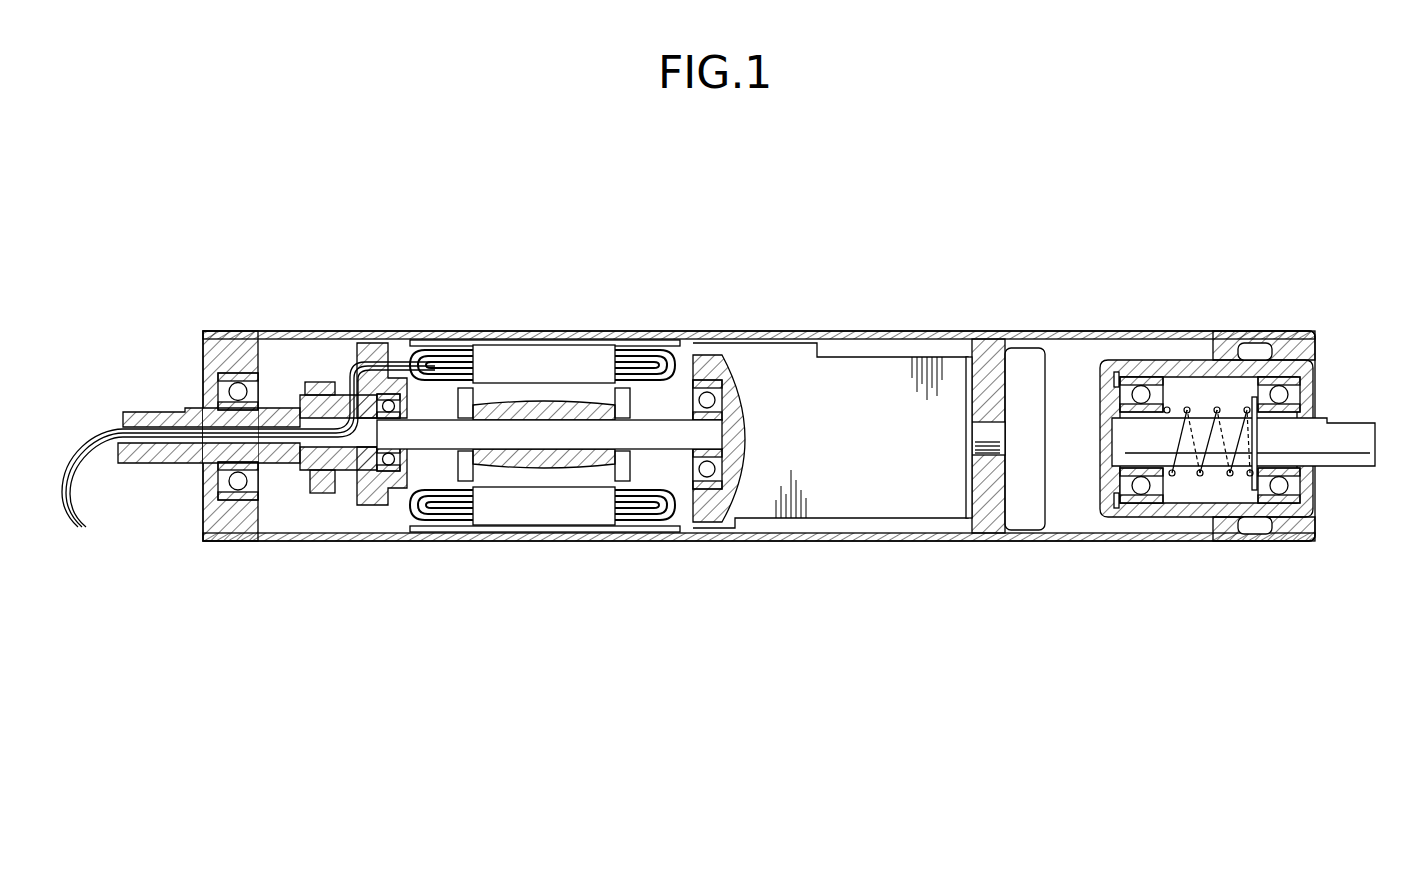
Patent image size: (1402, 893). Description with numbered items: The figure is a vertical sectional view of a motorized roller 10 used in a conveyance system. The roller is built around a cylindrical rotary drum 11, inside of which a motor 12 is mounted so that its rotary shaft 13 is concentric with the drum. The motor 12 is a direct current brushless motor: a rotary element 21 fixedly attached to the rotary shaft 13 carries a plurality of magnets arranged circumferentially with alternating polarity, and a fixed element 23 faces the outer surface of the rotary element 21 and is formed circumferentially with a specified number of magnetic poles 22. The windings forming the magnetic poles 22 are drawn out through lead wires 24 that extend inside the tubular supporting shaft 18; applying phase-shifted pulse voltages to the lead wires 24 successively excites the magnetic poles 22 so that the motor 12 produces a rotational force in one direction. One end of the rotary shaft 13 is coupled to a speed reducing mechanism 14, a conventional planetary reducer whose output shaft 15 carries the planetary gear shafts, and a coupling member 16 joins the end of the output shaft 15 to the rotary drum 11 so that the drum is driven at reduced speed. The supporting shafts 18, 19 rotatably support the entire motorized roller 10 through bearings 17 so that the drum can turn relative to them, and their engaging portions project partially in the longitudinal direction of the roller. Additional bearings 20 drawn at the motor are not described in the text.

The motorized roller 10 is at (942, 278).
The cylindrical rotary drum 11 is at (729, 337).
The motor 12 is at (639, 470).
The rotary shaft 13 is at (586, 432).
The speed reducing mechanism 14 is at (835, 374).
The output shaft 15 is at (987, 430).
The coupling member 16 is at (1027, 352).
The bearings 17 is at (207, 530).
The supporting shaft 18 is at (203, 452).
The supporting shaft 19 is at (1307, 434).
The motor bearing 20 is at (395, 343).
The rotary element 21 is at (546, 403).
The magnetic poles 22 is at (444, 345).
The fixed element 23 is at (514, 360).
The lead wires 24 is at (75, 457).